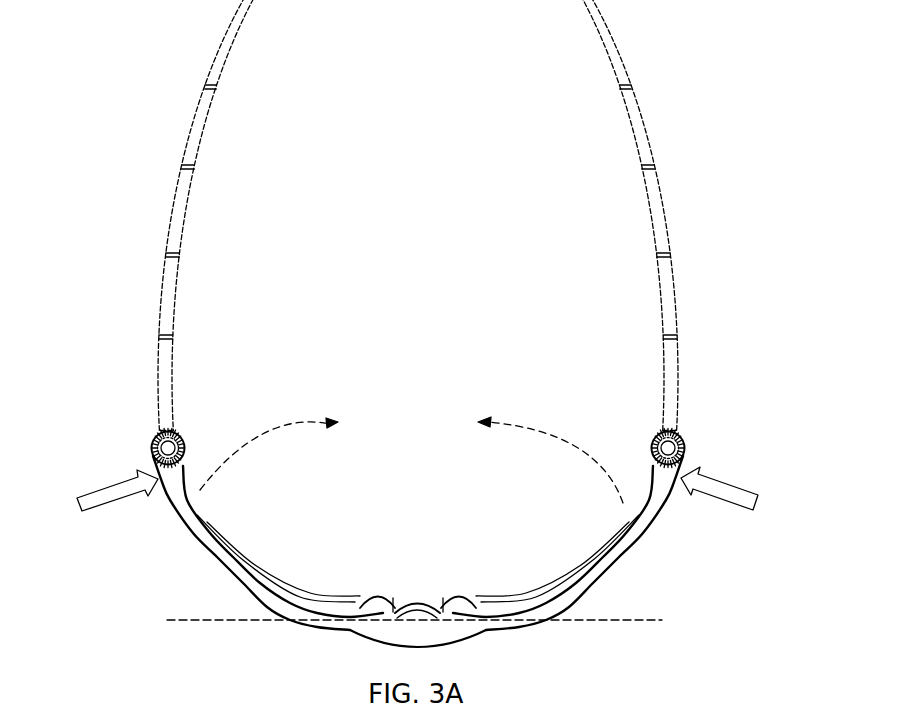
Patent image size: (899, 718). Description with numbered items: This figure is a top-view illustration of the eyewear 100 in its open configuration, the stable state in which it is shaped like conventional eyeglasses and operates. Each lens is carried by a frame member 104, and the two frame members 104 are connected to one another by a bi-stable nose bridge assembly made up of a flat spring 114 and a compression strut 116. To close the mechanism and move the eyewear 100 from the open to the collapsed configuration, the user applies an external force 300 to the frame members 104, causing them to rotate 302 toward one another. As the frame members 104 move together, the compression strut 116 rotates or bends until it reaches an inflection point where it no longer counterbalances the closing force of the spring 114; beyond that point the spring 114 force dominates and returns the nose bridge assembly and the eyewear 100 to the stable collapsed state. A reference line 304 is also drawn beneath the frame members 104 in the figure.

The eyewear 100 is at (117, 102).
The frame member 104 is at (165, 508).
The flat spring 114 is at (363, 634).
The compression strut 116 is at (403, 607).
The external force 300 is at (106, 497).
The rotate 302 is at (233, 442).
The reference plane 304 is at (622, 621).